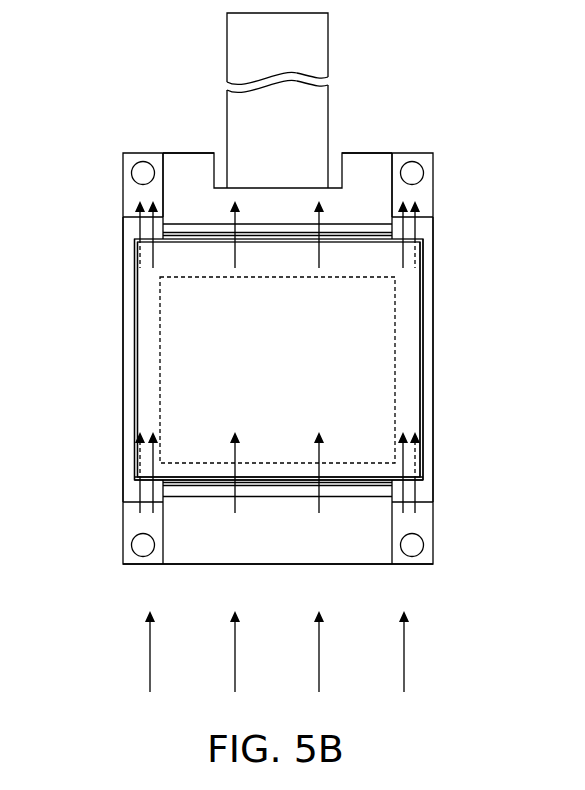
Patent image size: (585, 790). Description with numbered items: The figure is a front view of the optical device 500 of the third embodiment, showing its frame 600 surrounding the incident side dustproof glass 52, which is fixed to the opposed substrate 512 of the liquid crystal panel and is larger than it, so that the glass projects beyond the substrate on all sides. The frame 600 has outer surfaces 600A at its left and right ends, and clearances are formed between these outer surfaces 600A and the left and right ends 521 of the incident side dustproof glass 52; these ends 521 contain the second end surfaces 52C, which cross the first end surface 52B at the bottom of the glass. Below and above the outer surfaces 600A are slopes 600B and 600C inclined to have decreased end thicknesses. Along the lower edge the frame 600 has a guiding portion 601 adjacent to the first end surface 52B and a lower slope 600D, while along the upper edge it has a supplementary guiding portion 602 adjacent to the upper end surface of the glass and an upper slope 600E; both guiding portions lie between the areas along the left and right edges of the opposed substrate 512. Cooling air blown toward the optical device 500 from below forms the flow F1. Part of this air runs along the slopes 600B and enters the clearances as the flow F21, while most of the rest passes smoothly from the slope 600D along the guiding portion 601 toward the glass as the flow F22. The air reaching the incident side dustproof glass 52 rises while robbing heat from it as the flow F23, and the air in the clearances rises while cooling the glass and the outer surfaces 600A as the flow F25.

The optical device 500 is at (417, 93).
The frame 600 is at (370, 165).
The upper slope 600E is at (185, 173).
The supplementary guiding portion 602 is at (278, 230).
The slopes 600C is at (130, 160).
The slopes 600B is at (132, 522).
The outer surfaces 600A is at (128, 385).
The lower slope 600D is at (280, 566).
The guiding portion 601 is at (302, 488).
The incident side dustproof glass 52 is at (425, 283).
The first end surface 52B is at (262, 481).
The left and right ends 521 is at (138, 330).
The second end surfaces 52C is at (136, 360).
The opposed substrate 512 is at (398, 312).
The flow F25 is at (127, 257).
The flow F23 is at (233, 247).
The flow F21 is at (135, 455).
The flow F22 is at (235, 512).
The flow F1 is at (233, 658).